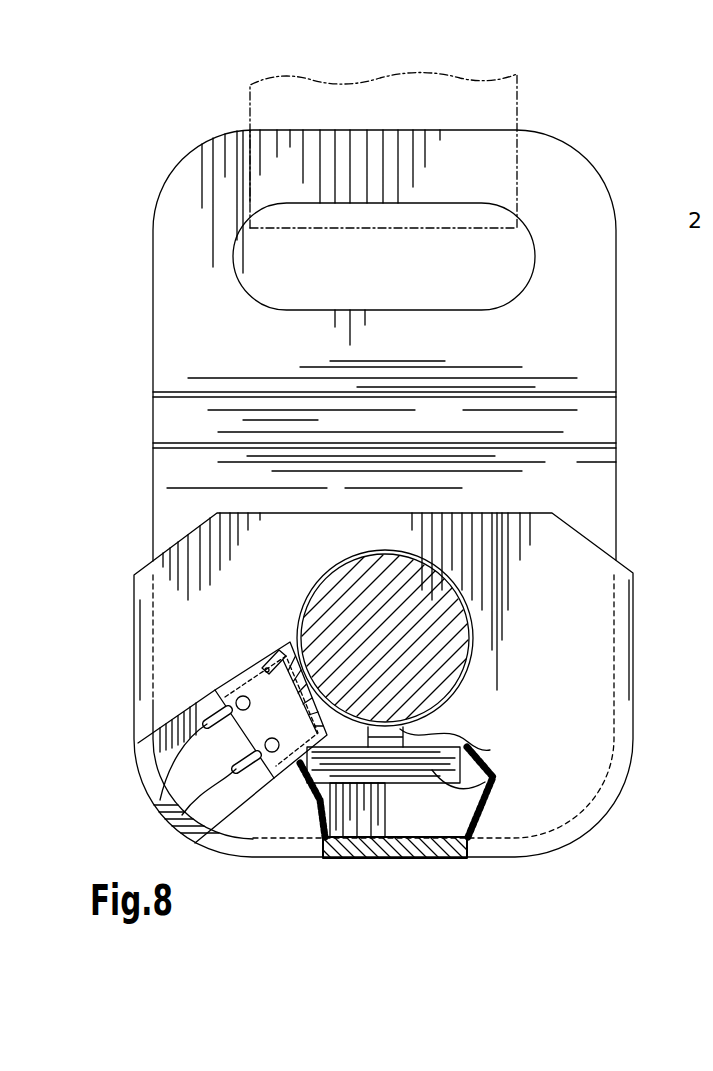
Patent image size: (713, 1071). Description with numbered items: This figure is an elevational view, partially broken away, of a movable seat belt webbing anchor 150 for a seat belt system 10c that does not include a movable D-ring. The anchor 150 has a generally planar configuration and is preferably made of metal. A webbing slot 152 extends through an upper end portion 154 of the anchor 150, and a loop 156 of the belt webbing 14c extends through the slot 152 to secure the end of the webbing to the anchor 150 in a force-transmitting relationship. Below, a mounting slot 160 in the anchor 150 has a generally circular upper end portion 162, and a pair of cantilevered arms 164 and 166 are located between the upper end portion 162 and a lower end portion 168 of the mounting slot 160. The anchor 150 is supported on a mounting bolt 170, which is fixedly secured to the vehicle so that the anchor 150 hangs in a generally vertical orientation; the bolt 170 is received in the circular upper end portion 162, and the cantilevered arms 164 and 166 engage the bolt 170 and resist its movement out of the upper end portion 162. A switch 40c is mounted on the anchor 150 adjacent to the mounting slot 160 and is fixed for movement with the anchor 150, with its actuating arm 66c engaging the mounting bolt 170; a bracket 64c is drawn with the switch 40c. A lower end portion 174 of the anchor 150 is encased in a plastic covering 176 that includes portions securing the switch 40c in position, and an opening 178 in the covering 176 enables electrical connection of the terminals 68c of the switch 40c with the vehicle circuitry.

The seat belt system 10c is at (642, 533).
The belt webbing 14c is at (517, 106).
The switch 40c is at (230, 663).
The bracket 64c is at (224, 696).
The actuating arm 66c is at (283, 643).
The terminals 68c is at (234, 771).
The anchor 150 is at (628, 468).
The webbing slot 152 is at (512, 300).
The upper end portion 154 is at (200, 343).
The loop 156 is at (423, 230).
The mounting slot 160 is at (472, 673).
The upper end portion 162 is at (473, 630).
The cantilevered arm 164 is at (488, 748).
The cantilevered arm 166 is at (350, 733).
The lower end portion 168 is at (490, 780).
The mounting bolt 170 is at (370, 600).
The lower end portion 174 is at (473, 833).
The plastic covering 176 is at (587, 770).
The opening 178 is at (232, 800).